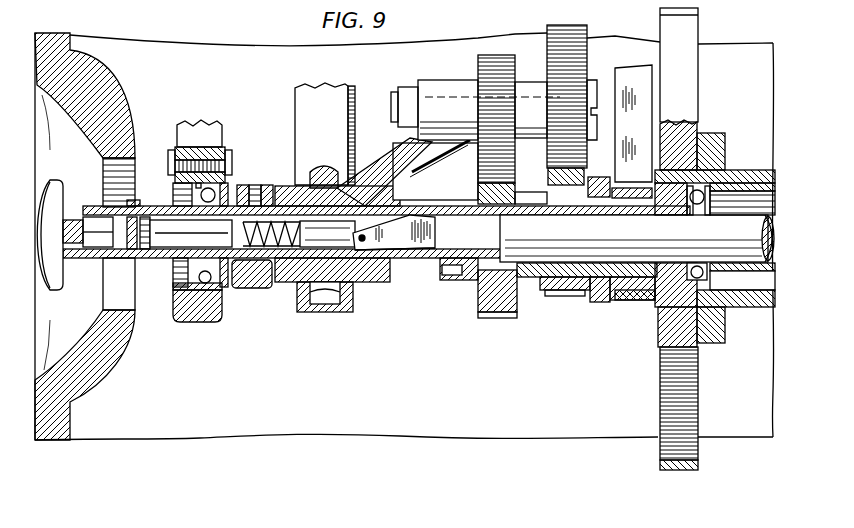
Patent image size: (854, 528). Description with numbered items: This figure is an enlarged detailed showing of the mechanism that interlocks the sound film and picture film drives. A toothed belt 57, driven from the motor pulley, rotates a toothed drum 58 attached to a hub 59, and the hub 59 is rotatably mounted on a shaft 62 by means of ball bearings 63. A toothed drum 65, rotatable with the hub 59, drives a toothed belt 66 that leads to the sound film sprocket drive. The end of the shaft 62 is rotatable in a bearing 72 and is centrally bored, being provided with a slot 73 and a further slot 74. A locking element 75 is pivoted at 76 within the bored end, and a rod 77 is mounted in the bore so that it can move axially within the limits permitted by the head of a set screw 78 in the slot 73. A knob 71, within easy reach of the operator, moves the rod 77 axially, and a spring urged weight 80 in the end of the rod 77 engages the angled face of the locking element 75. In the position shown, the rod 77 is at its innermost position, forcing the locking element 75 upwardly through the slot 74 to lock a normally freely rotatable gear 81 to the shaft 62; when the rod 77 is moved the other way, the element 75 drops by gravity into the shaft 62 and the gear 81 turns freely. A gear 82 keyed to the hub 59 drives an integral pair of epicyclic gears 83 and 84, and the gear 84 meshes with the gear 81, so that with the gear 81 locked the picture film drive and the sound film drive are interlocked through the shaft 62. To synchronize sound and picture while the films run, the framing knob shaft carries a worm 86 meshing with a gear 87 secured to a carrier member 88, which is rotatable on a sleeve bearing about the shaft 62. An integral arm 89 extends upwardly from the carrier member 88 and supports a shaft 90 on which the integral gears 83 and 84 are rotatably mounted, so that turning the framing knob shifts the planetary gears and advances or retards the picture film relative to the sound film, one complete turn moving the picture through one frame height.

The toothed belt 57 is at (678, 470).
The toothed drum 58 is at (697, 408).
The hub 59 is at (725, 332).
The shaft 62 is at (753, 237).
The ball bearings 63 is at (733, 212).
The toothed drum 65 is at (633, 292).
The toothed belt 66 is at (635, 80).
The knob 71 is at (63, 280).
The bearing 72 is at (228, 193).
The slot 73 is at (130, 200).
The slot 74 is at (447, 223).
The locking element 75 is at (413, 235).
The pivot 76 is at (363, 242).
The rod 77 is at (230, 258).
The set screw 78 is at (150, 206).
The spring urged weight 80 is at (280, 283).
The gear 81 is at (493, 305).
The gear 82 is at (565, 290).
The epicyclic gear 83 is at (572, 32).
The epicyclic gear 84 is at (503, 57).
The worm 86 is at (290, 186).
The gear 87 is at (324, 297).
The carrier member 88 is at (382, 283).
The arm 89 is at (432, 153).
The shaft 90 is at (434, 88).